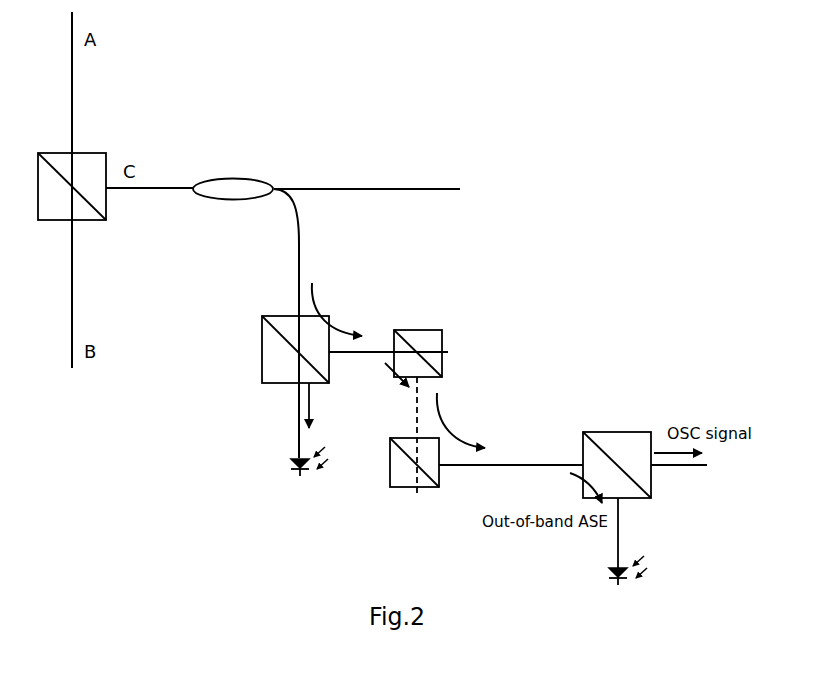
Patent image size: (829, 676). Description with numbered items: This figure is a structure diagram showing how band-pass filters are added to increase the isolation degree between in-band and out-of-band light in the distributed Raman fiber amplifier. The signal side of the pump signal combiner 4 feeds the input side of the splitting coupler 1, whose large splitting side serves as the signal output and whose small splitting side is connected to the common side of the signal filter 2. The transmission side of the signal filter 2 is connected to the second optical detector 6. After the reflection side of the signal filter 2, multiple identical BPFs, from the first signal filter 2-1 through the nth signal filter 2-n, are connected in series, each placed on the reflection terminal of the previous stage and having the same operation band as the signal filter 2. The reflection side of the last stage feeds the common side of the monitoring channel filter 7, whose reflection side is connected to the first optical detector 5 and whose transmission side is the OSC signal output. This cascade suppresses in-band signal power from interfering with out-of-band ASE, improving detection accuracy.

The splitting coupler 1 is at (233, 189).
The signal filter 2 is at (295, 349).
The first signal filter 2-1 is at (418, 353).
The nth signal filter 2-n is at (414, 462).
The pump signal combiner 4 is at (72, 186).
The first optical detector 5 is at (634, 570).
The second optical detector 6 is at (316, 464).
The monitoring channel filter 7 is at (617, 465).